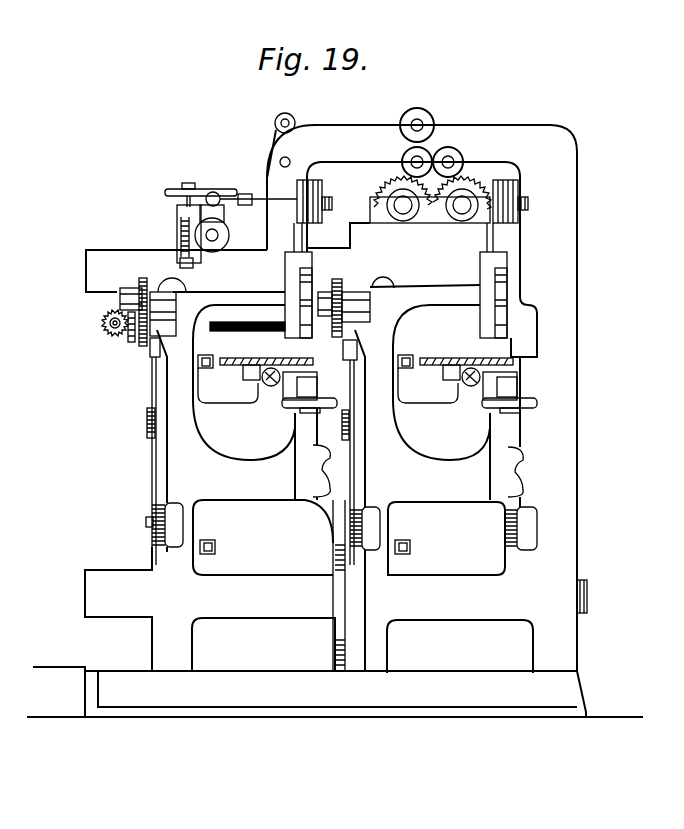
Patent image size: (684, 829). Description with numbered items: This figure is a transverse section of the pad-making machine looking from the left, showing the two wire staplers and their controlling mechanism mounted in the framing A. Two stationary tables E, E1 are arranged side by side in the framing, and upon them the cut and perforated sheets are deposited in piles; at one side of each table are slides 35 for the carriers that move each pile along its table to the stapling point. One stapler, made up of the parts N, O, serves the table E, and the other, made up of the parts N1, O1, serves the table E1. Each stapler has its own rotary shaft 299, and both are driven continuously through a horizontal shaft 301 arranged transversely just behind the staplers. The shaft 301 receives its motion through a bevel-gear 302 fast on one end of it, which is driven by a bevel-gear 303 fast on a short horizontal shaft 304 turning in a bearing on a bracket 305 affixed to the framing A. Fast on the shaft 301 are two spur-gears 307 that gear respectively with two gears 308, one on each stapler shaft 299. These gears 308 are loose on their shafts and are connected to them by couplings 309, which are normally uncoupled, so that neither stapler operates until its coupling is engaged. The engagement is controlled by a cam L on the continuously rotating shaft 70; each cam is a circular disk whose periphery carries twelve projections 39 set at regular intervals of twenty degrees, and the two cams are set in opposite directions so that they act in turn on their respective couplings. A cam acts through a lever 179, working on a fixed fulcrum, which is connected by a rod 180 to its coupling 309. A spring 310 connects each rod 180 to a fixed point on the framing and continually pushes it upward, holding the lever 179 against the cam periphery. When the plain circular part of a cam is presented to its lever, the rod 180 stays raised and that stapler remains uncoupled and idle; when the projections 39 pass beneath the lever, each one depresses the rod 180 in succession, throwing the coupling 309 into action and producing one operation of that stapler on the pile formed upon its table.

The rotary shaft 299 is at (119, 293).
The bracket 305 is at (118, 297).
The bevel-gear 303 is at (100, 318).
The short horizontal shaft 304 is at (108, 332).
The bevel-gear 302 is at (128, 338).
The spur-gear 307 is at (150, 357).
The spring 310 is at (146, 427).
The rod 180 is at (152, 478).
The lever 179 is at (146, 522).
The projections 39 is at (152, 545).
The slides 35 is at (212, 358).
The horizontal shaft 301 is at (256, 322).
The gear 308 is at (144, 285).
The coupling 309 is at (173, 297).
The continuously-rotating shaft 70 is at (587, 594).
The framing A is at (567, 418).
The cam L is at (150, 553).
The stapler N is at (504, 259).
The stapler N1 is at (297, 259).
The stationary table E is at (438, 370).
The stationary table E1 is at (242, 368).
The stapler O is at (520, 389).
The stapler O1 is at (327, 386).